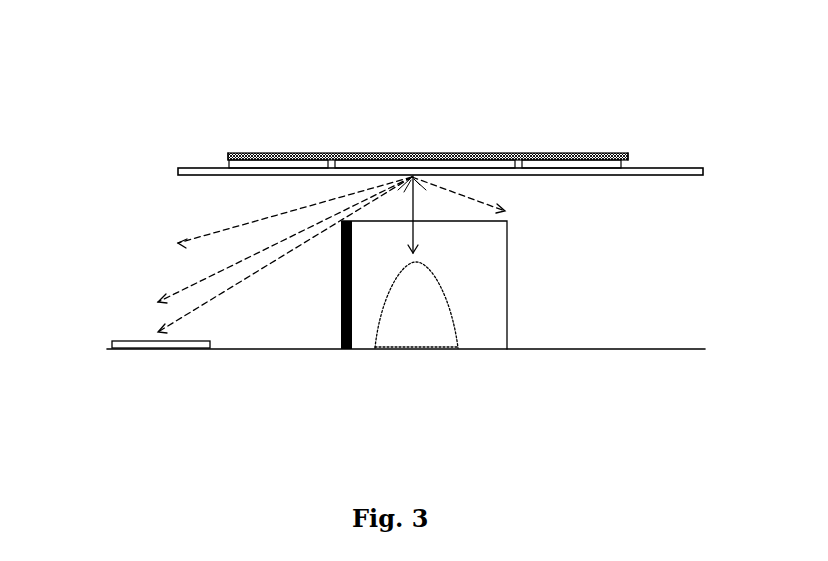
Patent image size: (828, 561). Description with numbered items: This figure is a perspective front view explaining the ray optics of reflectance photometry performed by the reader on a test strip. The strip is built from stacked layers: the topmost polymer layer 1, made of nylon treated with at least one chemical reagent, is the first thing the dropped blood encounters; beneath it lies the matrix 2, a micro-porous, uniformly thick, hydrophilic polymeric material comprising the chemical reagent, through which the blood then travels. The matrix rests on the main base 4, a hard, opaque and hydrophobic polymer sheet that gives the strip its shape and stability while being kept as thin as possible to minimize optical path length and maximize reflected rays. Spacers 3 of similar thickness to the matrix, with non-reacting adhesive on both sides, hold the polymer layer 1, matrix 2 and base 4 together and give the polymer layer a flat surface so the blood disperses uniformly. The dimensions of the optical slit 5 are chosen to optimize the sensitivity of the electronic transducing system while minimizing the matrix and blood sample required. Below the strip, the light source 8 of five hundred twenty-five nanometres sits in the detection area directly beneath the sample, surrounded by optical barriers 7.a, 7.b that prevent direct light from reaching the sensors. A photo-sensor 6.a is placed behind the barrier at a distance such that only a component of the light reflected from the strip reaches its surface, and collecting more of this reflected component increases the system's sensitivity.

The polymer layer 1 is at (613, 152).
The matrix 2 is at (350, 157).
The spacers 3 is at (228, 160).
The main base 4 is at (705, 172).
The optical slit 5 is at (452, 177).
The photo-sensor 6.a is at (107, 343).
The optical barrier 7.a is at (336, 297).
The optical barrier 7.b is at (488, 270).
The light source 8 is at (405, 322).